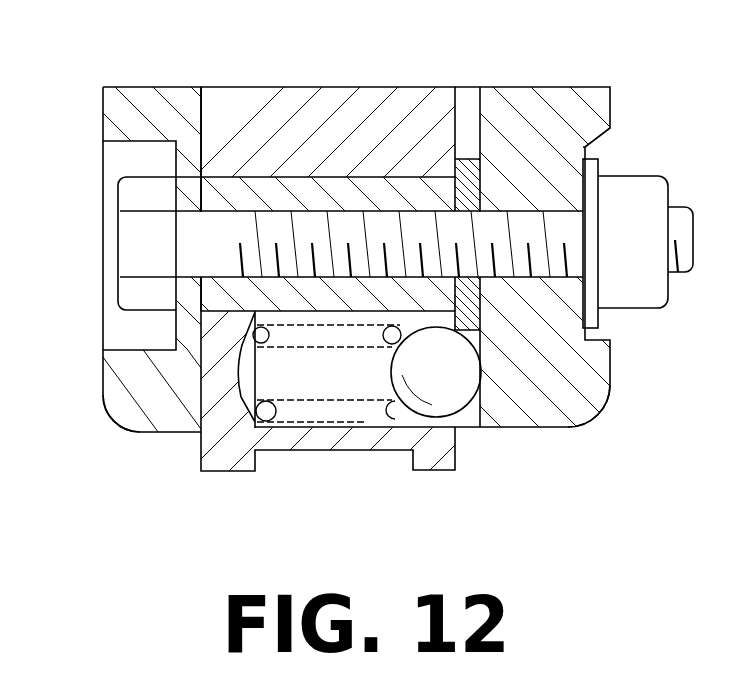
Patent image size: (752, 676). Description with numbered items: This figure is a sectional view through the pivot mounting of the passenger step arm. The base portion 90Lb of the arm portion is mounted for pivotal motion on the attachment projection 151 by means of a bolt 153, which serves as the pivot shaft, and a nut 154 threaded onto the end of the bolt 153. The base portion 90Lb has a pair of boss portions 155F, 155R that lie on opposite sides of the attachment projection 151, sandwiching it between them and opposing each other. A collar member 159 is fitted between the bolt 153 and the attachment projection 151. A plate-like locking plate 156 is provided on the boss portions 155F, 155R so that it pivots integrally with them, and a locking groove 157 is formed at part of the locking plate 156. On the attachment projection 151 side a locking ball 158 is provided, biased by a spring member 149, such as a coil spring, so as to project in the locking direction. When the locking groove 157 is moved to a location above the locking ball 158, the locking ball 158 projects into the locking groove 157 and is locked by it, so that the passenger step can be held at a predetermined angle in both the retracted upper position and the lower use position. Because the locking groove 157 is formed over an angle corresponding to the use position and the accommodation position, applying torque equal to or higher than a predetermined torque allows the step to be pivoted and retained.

The spring member 149 is at (326, 450).
The attachment projection 151 is at (337, 118).
The bolt 153 is at (141, 244).
The nut 154 is at (638, 300).
The boss portion 155F is at (142, 402).
The boss portion 155R is at (578, 435).
The locking plate 156 is at (469, 160).
The locking groove 157 is at (481, 357).
The locking ball 158 is at (434, 388).
The collar member 159 is at (373, 174).
The base portion 90Lb is at (128, 383).